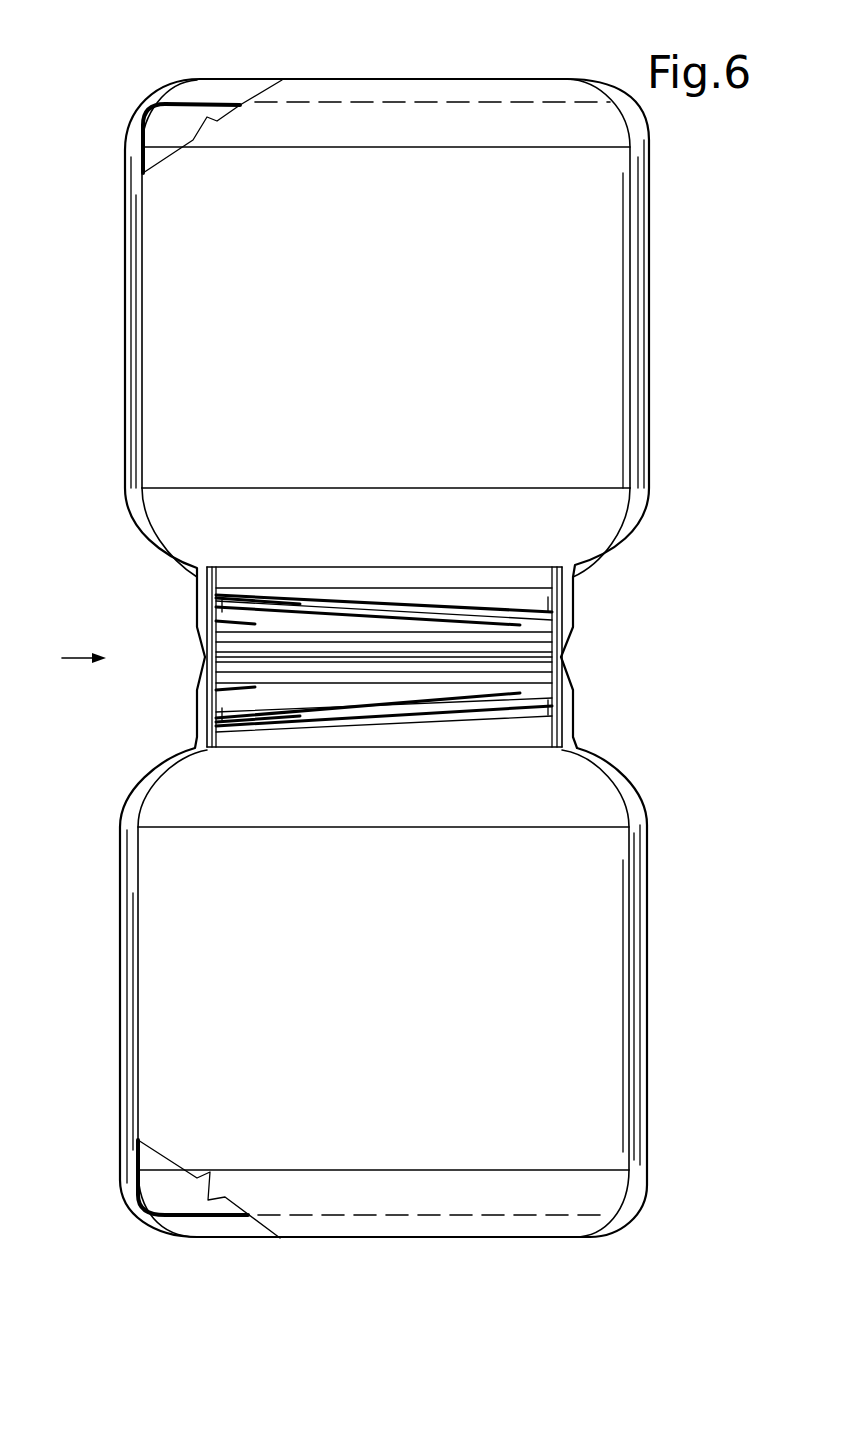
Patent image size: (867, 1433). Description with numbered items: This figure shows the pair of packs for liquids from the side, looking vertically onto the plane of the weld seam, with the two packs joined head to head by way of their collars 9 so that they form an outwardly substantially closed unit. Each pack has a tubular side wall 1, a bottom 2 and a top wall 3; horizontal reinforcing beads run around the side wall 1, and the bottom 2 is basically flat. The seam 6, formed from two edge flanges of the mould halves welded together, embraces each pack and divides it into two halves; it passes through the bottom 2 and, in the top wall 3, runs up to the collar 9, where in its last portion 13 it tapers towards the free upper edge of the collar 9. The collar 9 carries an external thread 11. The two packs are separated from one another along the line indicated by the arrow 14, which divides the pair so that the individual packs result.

The side wall 1 is at (605, 298).
The bottom 2 is at (207, 100).
The top wall 3 is at (583, 746).
The seam 6 is at (637, 408).
The collar 9 is at (548, 623).
The external thread 11 is at (213, 600).
The last portion 13 is at (202, 628).
The arrow 14 is at (78, 660).